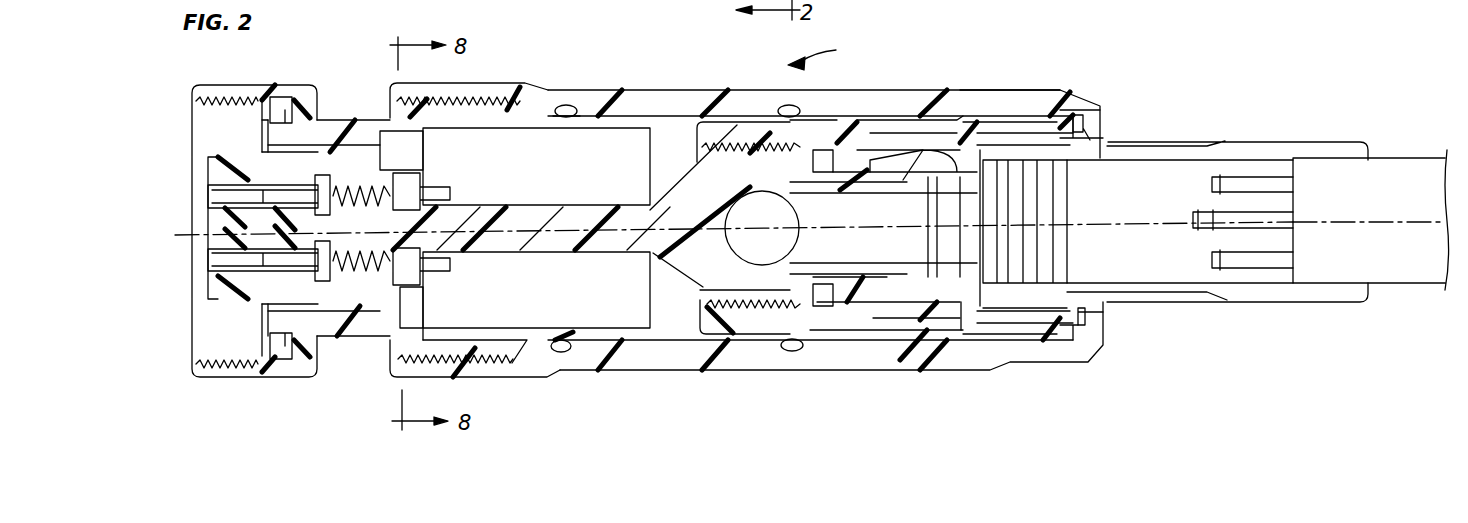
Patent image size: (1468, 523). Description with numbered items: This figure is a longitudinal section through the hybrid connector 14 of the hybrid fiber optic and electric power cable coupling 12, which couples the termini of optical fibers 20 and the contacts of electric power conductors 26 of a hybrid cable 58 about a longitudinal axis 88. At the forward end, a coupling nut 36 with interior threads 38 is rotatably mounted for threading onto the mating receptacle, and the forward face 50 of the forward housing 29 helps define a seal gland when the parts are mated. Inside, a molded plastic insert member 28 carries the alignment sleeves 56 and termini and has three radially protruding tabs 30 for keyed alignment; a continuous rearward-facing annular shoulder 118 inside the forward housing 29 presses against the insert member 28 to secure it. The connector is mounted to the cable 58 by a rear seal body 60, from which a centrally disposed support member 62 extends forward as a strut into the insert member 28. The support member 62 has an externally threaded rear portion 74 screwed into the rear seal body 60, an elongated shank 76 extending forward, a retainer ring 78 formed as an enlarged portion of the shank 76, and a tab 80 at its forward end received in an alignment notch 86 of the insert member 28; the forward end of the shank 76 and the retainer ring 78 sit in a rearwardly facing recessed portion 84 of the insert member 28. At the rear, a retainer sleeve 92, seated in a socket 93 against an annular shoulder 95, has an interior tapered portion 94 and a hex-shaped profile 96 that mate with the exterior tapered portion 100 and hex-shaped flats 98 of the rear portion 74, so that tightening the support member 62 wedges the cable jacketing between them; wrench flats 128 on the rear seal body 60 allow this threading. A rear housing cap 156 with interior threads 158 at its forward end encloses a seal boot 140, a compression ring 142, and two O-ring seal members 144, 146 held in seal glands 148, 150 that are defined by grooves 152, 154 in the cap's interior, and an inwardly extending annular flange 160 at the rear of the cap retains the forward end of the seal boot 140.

The hybrid fiber optic and electric power cable coupling 12 is at (827, 53).
The hybrid connector 14 is at (942, 72).
The optical fibers 20 is at (1222, 176).
The electric power conductors 26 is at (1205, 228).
The insert member 28 is at (335, 311).
The forward housing 29 is at (355, 127).
The tabs 30 is at (284, 88).
The coupling nut 36 is at (282, 380).
The interior threads 38 is at (205, 365).
The forward face 50 is at (262, 120).
The alignment sleeves 56 is at (232, 283).
The hybrid cable 58 is at (1387, 160).
The rear seal body 60 is at (1020, 110).
The support member 62 is at (678, 272).
The rear portion 74 is at (762, 300).
The elongated shank 76 is at (550, 212).
The retainer ring 78 is at (423, 283).
The tab 80 is at (316, 188).
The recessed portion 84 is at (425, 176).
The alignment notch 86 is at (265, 160).
The longitudinal axis 88 is at (1405, 218).
The retainer sleeve 92 is at (930, 288).
The socket 93 is at (1000, 190).
The interior tapered portion 94 is at (862, 180).
The annular shaped shoulder 95 is at (967, 262).
The hex-shaped profile 96 is at (836, 190).
The hex-shaped flats 98 is at (833, 265).
The exterior tapered portion 100 is at (897, 262).
The annular-shaped shoulder 118 is at (423, 152).
The flats 128 is at (887, 122).
The seal boot 140 is at (1278, 142).
The compression ring 142 is at (1103, 325).
The seal member 144 is at (565, 352).
The seal member 146 is at (790, 352).
The seal gland 148 is at (570, 118).
The seal gland 150 is at (783, 107).
The groove 152 is at (560, 107).
The groove 154 is at (751, 225).
The rear housing cap 156 is at (1000, 95).
The interior threads 158 is at (483, 347).
The annular-shaped flange 160 is at (1103, 118).